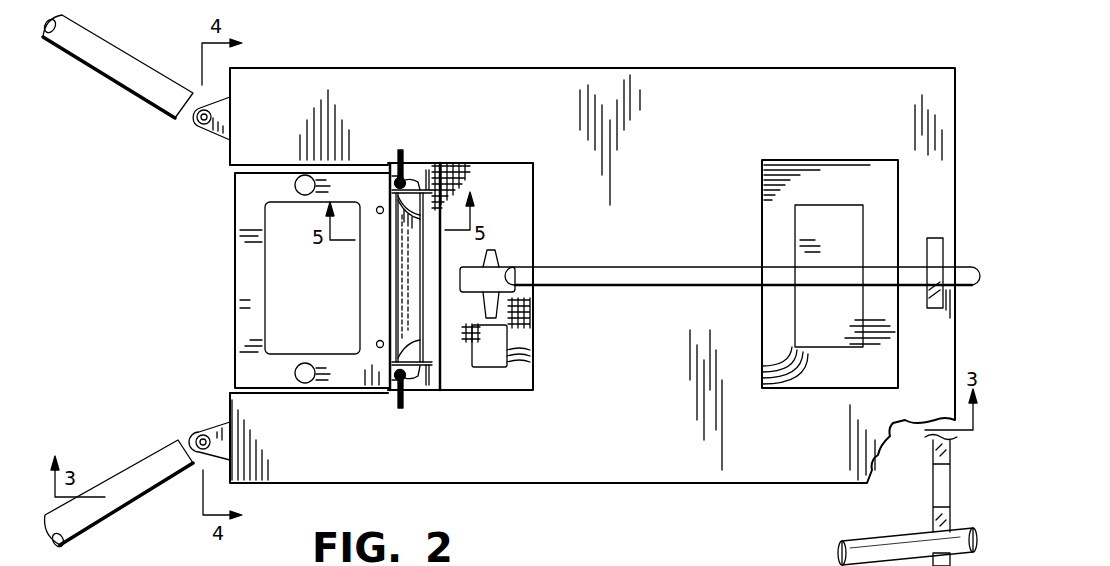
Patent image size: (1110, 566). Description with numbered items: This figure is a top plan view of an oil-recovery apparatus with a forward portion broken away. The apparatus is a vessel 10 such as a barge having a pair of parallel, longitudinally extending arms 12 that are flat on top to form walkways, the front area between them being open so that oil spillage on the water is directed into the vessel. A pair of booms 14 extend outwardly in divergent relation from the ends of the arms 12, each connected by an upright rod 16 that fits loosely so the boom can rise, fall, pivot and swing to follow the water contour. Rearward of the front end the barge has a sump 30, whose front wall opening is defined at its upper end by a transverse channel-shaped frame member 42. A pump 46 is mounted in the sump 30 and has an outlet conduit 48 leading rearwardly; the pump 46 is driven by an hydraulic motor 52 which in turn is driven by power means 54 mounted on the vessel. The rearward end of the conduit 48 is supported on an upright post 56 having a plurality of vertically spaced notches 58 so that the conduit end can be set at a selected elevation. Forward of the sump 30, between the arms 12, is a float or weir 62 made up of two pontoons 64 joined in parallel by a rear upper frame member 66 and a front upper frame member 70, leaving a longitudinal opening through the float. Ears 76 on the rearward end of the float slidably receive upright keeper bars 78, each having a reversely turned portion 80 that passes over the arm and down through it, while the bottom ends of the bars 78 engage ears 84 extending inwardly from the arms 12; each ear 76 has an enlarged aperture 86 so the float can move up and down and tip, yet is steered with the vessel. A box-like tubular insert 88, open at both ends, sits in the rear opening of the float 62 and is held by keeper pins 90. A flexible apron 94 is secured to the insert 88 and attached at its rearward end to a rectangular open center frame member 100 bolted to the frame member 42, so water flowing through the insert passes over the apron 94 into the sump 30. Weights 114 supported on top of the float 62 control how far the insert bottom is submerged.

The vessel 10 is at (682, 472).
The arms 12 is at (318, 86).
The booms 14 is at (80, 39).
The upright rods 16 is at (203, 130).
The sump 30 is at (496, 187).
The transverse channel-shaped frame member 42 is at (438, 392).
The pump 46 is at (475, 290).
The outlet conduit 48 is at (655, 276).
The hydraulic motor 52 is at (484, 354).
The power means 54 is at (848, 252).
The upright post 56 is at (935, 312).
The notches 58 is at (940, 555).
The float or weir 62 is at (248, 272).
The pontoons 64 is at (285, 363).
The rear upper frame member 66 is at (420, 288).
The front upper frame member 70 is at (248, 323).
The ears 76 is at (395, 180).
The keeper bars 78 is at (404, 150).
The reversely turned portions 80 is at (410, 178).
The ears 84 is at (428, 172).
The enlarged aperture 86 is at (400, 176).
The tubular insert 88 is at (395, 262).
The keeper pins 90 is at (376, 211).
The flexible apron 94 is at (410, 298).
The rectangular open center frame member 100 is at (425, 240).
The weights 114 is at (306, 194).